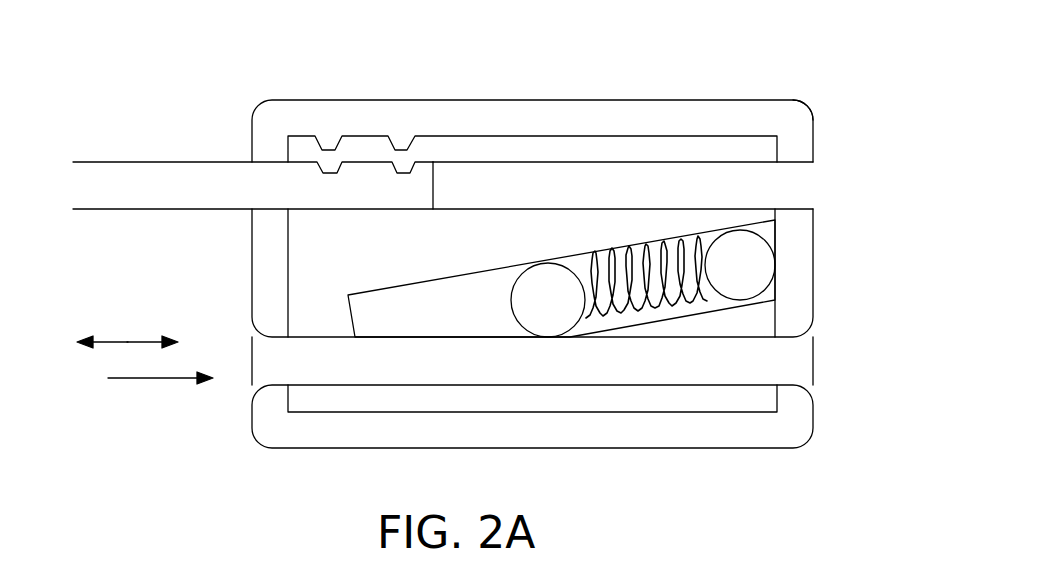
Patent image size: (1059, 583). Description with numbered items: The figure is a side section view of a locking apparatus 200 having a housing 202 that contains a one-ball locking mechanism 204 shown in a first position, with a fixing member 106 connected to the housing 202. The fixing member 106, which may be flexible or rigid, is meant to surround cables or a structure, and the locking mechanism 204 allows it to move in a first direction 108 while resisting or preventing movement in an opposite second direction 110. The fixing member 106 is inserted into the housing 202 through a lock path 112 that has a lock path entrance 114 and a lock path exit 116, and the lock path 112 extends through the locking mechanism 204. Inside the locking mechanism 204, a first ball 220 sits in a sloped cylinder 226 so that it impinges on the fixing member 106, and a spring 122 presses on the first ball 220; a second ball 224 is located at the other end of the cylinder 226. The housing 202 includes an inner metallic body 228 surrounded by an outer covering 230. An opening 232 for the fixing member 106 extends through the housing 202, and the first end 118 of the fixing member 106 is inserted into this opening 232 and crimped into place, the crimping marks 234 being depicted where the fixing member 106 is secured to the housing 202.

The locking apparatus 200 is at (166, 66).
The housing 202 is at (402, 80).
The one-ball locking mechanism 204 is at (627, 214).
The fixing member 106 is at (153, 190).
The first direction 108 is at (158, 327).
The second direction 110 is at (96, 327).
The lock path 112 is at (160, 393).
The lock path entrance 114 is at (263, 369).
The lock path exit 116 is at (798, 370).
The first end 118 is at (368, 178).
The spring 122 is at (667, 313).
The first ball 220 is at (573, 310).
The second ball 224 is at (747, 288).
The sloped cylinder 226 is at (488, 300).
The inner metallic body 228 is at (728, 147).
The outer covering 230 is at (788, 122).
The opening 232 is at (685, 180).
The crimping marks 234 is at (400, 143).